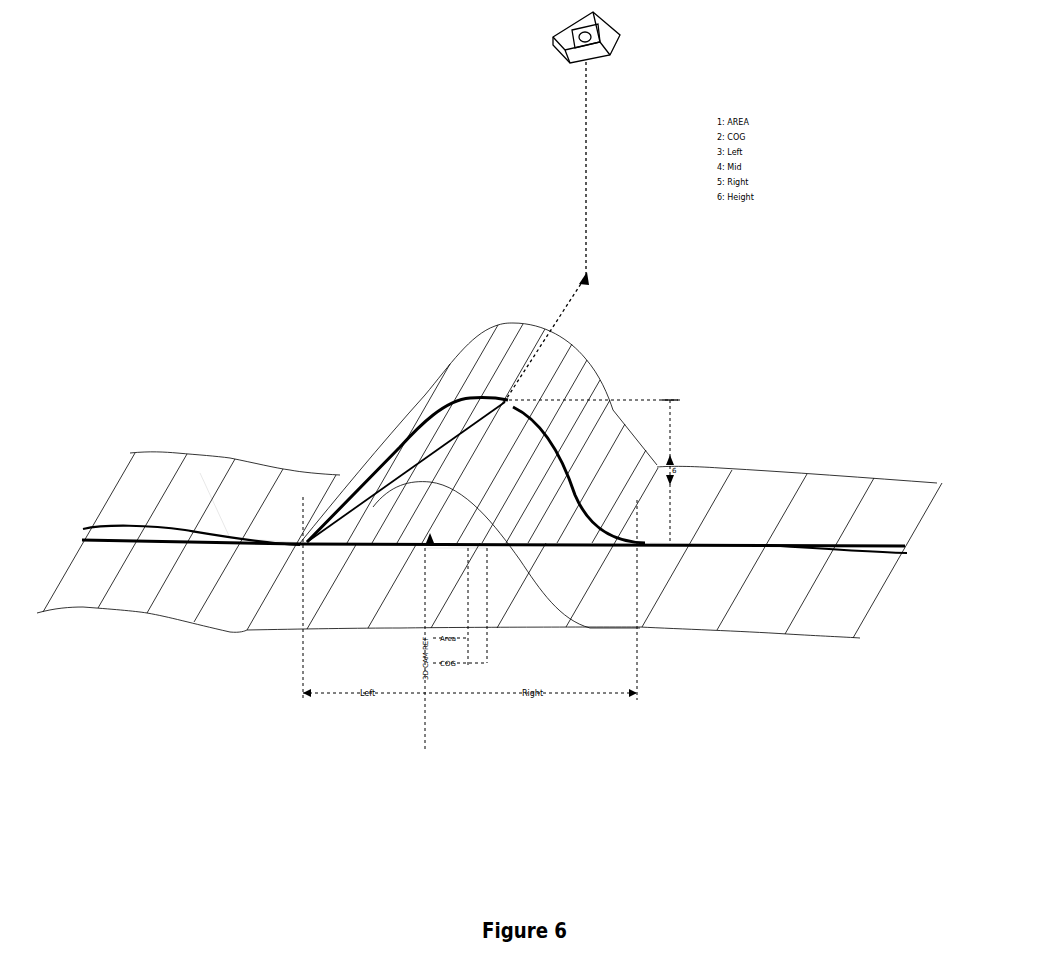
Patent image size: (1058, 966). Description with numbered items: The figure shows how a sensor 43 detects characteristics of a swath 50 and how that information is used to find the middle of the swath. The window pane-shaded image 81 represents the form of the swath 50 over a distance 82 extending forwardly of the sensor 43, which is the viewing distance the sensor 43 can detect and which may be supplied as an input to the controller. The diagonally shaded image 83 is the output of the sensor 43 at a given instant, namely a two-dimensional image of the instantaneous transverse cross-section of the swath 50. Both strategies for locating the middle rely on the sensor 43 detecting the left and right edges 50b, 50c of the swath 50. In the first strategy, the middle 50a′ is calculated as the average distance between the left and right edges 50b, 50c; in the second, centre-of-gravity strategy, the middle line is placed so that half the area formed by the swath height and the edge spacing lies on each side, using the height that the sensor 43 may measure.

The sensor 43 is at (615, 32).
The swath 50 is at (732, 468).
The first form of the middle of the swath 50a′ is at (436, 637).
The left edge of the swath 50b is at (337, 470).
The right edge of the swath 50c is at (685, 468).
The window pane-shaded image 81 is at (199, 473).
The distance 82 is at (570, 298).
The diagonally shaded image 83 is at (550, 532).